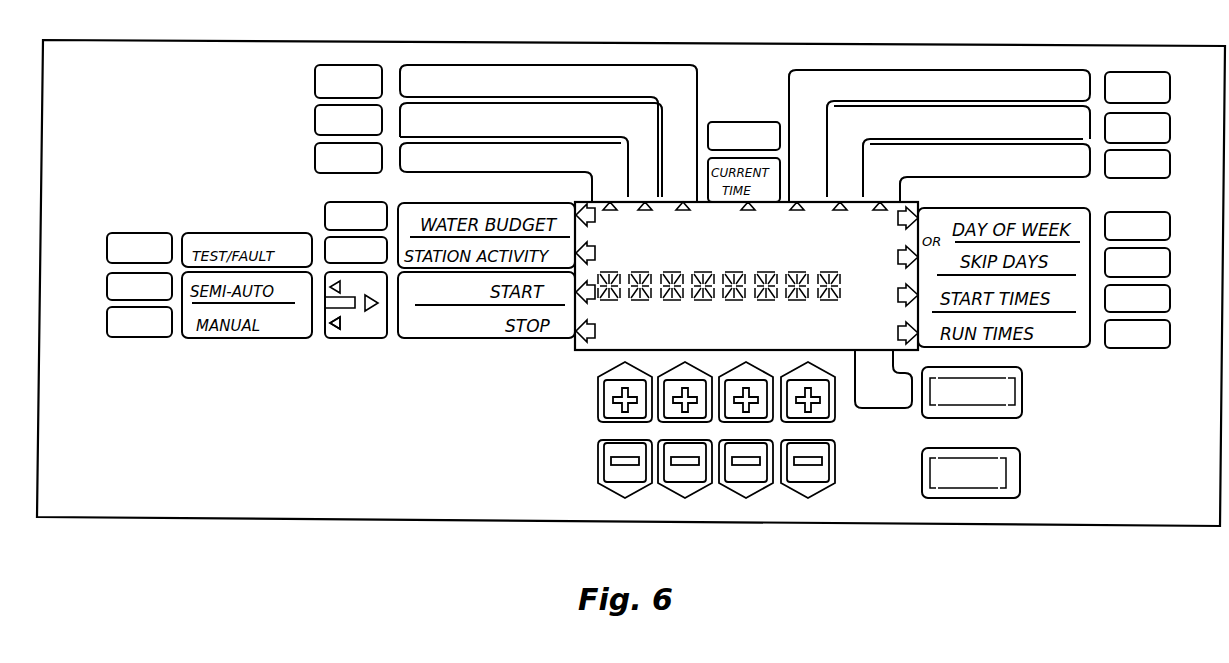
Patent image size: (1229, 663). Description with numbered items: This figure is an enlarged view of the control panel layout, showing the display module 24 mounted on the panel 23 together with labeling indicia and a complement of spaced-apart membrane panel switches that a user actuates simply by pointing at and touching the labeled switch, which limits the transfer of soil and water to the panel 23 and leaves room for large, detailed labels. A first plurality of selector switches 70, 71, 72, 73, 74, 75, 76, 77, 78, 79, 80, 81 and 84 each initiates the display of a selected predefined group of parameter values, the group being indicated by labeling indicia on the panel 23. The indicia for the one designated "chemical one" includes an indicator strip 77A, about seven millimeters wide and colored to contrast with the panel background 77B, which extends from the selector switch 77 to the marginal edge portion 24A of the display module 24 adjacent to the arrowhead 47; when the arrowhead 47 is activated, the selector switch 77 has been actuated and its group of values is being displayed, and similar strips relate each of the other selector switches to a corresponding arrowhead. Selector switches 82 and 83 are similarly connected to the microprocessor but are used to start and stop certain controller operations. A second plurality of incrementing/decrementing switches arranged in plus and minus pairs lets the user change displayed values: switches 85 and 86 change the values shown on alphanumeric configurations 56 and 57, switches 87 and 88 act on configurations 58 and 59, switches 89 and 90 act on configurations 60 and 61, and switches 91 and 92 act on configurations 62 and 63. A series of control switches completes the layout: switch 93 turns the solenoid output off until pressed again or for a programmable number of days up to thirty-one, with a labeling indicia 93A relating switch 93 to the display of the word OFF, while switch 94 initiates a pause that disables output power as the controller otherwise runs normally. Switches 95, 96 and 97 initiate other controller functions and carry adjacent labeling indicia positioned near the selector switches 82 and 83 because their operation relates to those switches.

The control panel 23 is at (237, 24).
The display module 24 is at (776, 217).
The marginal edge portion 24A is at (862, 206).
The arrowhead 47 is at (683, 210).
The alphanumeric configuration 56 is at (608, 273).
The alphanumeric configuration 57 is at (627, 305).
The alphanumeric configuration 58 is at (663, 272).
The alphanumeric configuration 59 is at (696, 305).
The alphanumeric configuration 60 is at (731, 272).
The alphanumeric configuration 61 is at (757, 305).
The alphanumeric configuration 62 is at (800, 272).
The alphanumeric configuration 63 is at (822, 305).
The selector switch 70 is at (1172, 90).
The selector switch 71 is at (1172, 128).
The selector switch 72 is at (1172, 165).
The selector switch 73 is at (1172, 228).
The selector switch 74 is at (1172, 263).
The selector switch 75 is at (1172, 299).
The selector switch 76 is at (1172, 335).
The selector switch 77 is at (316, 76).
The indicator strip 77A is at (443, 65).
The panel background 77B is at (762, 30).
The selector switch 78 is at (316, 114).
The selector switch 79 is at (316, 152).
The selector switch 80 is at (327, 206).
The selector switch 81 is at (325, 240).
The selector switch 82 is at (327, 300).
The selector switch 83 is at (327, 333).
The selector switch 84 is at (735, 122).
The incrementing switch 85 is at (600, 388).
The decrementing switch 86 is at (600, 474).
The incrementing switch 87 is at (658, 428).
The decrementing switch 88 is at (666, 490).
The incrementing switch 89 is at (763, 428).
The decrementing switch 90 is at (742, 491).
The incrementing switch 91 is at (835, 415).
The decrementing switch 92 is at (792, 492).
The control switch 93 is at (1022, 392).
The labeling indicia 93A is at (903, 410).
The control switch 94 is at (1020, 467).
The control switch 95 is at (113, 240).
The control switch 96 is at (110, 285).
The control switch 97 is at (120, 330).